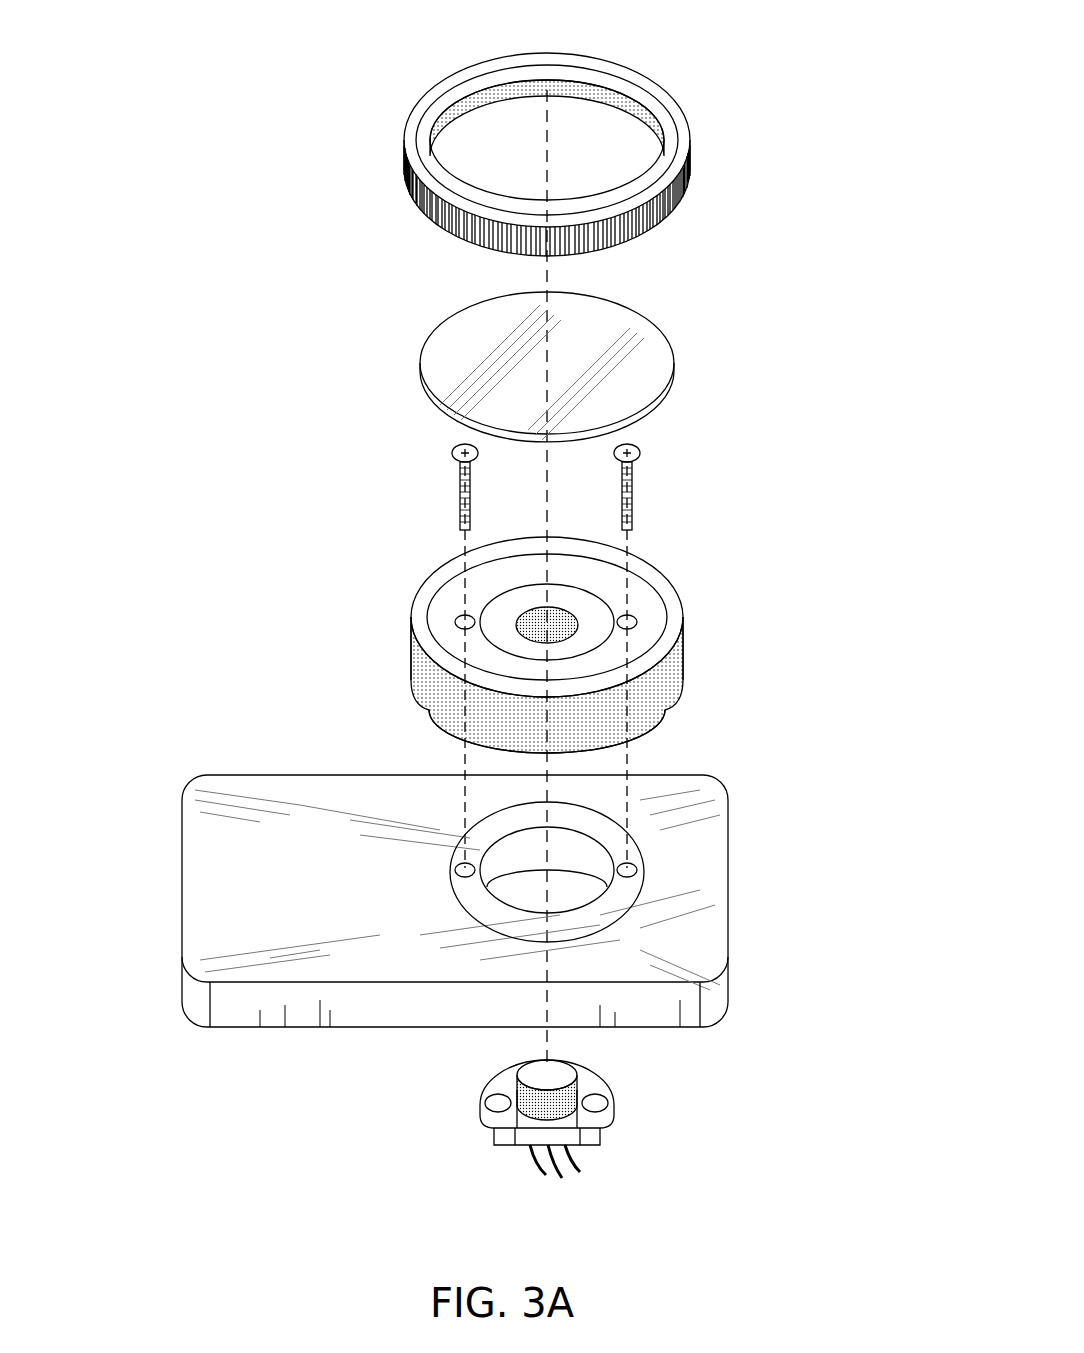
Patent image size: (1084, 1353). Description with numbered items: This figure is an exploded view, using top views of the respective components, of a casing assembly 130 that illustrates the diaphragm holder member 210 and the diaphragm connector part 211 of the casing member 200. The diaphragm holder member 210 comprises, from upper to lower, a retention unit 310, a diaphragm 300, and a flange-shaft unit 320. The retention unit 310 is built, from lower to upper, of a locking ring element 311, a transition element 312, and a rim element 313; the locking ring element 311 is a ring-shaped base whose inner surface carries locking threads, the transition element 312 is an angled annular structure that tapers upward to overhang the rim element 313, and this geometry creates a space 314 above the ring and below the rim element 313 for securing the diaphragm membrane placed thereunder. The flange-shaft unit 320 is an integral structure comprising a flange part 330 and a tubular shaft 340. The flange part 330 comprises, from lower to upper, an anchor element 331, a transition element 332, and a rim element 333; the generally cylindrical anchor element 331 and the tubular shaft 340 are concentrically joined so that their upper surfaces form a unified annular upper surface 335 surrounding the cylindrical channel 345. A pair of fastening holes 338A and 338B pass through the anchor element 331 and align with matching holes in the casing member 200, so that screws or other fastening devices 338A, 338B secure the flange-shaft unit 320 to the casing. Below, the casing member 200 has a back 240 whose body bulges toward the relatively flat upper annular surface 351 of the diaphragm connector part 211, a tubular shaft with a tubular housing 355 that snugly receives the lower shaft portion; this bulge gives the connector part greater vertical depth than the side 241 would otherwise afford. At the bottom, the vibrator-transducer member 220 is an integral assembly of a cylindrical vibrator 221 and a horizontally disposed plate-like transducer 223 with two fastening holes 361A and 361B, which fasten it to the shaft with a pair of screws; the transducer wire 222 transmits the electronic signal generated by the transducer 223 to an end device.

The light assembly 130 is at (905, 7).
The casing member 200 is at (182, 880).
The diaphragm holder member 210 is at (393, 588).
The diaphragm connector part 211 is at (615, 889).
The vibrator-transducer member 220 is at (448, 1104).
The vibrator 221 is at (545, 1103).
The transducer wire 222 is at (583, 1172).
The transducer 223 is at (590, 1087).
The back 240 is at (303, 922).
The side 241 is at (665, 1003).
The diaphragm 300 is at (632, 362).
The retention unit 310 is at (404, 137).
The locking ring element 311 is at (672, 212).
The transition element 312 is at (667, 175).
The rim element 313 is at (655, 133).
The space 314 is at (545, 120).
The flange-shaft unit 320 is at (515, 743).
The flange part 330 is at (683, 657).
The anchor element 331 is at (660, 686).
The transition element 332 is at (668, 648).
The rim element 333 is at (660, 600).
The upper surface 335 is at (492, 578).
The fastening hole 338A is at (462, 615).
The fastening hole 338B is at (632, 615).
The tubular shaft 340 is at (547, 737).
The cylindrical channel 345 is at (549, 622).
The upper annular surface 351 is at (565, 922).
The tubular housing 355 is at (547, 897).
The fastening hole 361A is at (492, 1106).
The fastening hole 361B is at (600, 1104).